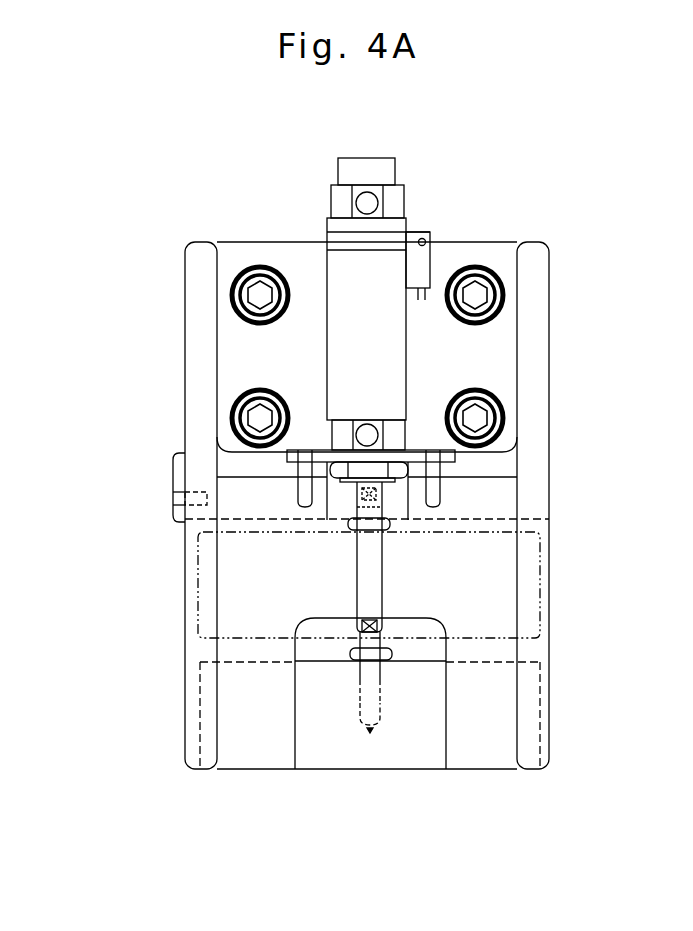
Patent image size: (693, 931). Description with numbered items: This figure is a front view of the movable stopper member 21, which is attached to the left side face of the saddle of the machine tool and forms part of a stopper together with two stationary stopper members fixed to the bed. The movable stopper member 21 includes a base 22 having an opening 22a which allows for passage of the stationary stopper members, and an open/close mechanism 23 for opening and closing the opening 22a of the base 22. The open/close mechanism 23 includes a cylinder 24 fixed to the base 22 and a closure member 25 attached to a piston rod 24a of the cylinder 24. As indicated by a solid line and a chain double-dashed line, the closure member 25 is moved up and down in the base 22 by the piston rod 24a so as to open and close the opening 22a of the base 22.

The movable stopper member 21 is at (493, 197).
The base 22 is at (549, 372).
The opening 22a is at (297, 735).
The open/close mechanism 23 is at (327, 183).
The cylinder 24 is at (342, 352).
The piston rod 24a is at (373, 578).
The closure member 25 is at (210, 594).